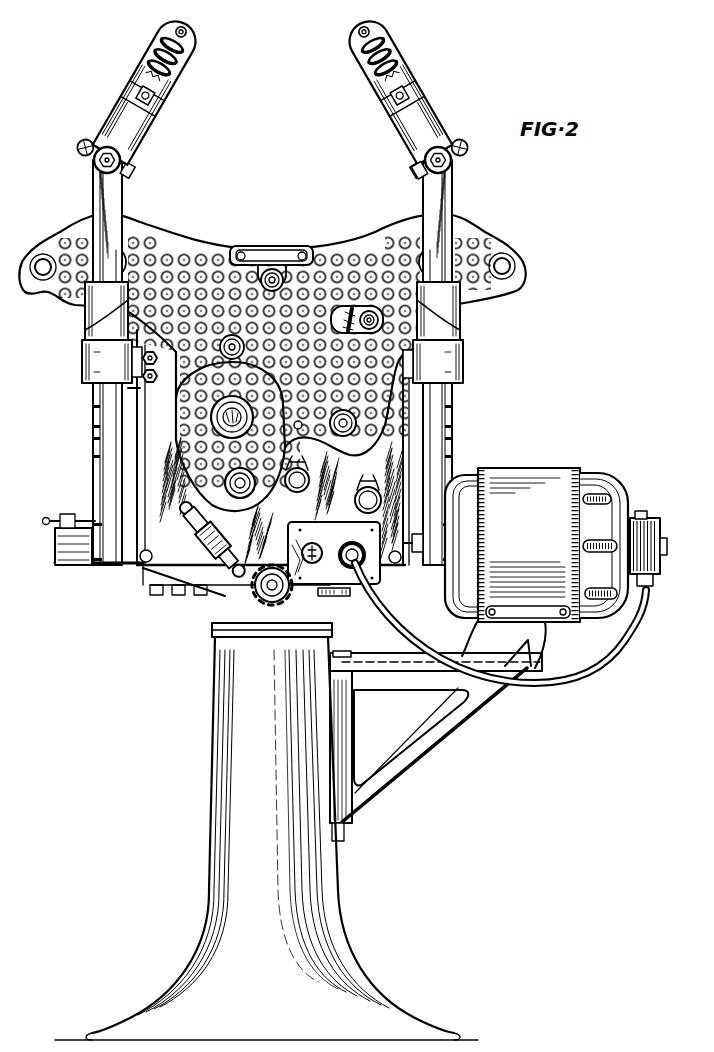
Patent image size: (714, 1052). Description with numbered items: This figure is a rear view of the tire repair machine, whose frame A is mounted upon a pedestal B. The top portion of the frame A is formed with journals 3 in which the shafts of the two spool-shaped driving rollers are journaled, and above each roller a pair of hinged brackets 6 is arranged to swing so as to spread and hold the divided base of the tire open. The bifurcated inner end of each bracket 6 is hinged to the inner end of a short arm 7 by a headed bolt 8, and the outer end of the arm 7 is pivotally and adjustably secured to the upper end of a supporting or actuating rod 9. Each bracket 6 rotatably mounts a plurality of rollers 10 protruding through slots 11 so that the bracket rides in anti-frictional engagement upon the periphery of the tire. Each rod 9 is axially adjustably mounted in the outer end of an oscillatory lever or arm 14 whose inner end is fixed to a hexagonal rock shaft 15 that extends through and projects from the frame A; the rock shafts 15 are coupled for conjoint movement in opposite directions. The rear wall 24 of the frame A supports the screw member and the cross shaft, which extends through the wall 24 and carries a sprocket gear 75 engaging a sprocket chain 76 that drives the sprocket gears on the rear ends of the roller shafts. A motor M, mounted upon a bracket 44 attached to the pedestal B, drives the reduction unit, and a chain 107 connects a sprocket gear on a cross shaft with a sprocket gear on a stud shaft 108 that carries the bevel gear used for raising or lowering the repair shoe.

The journals 3 is at (137, 232).
The hinged brackets 6 is at (150, 100).
The short arm 7 is at (96, 168).
The headed bolt 8 is at (420, 168).
The supporting or actuating rod 9 is at (92, 327).
The rollers 10 is at (180, 84).
The slots 11 is at (162, 61).
The oscillatory lever or arm 14 is at (84, 376).
The rock shaft 15 is at (136, 386).
The rear wall 24 is at (400, 437).
The bracket 44 is at (447, 720).
The sprocket gear 75 is at (362, 313).
The sprocket chain 76 is at (343, 310).
The chain 107 is at (262, 604).
The stud shaft 108 is at (292, 598).
The frame A is at (181, 567).
The pedestal B is at (220, 770).
The motor M is at (511, 575).